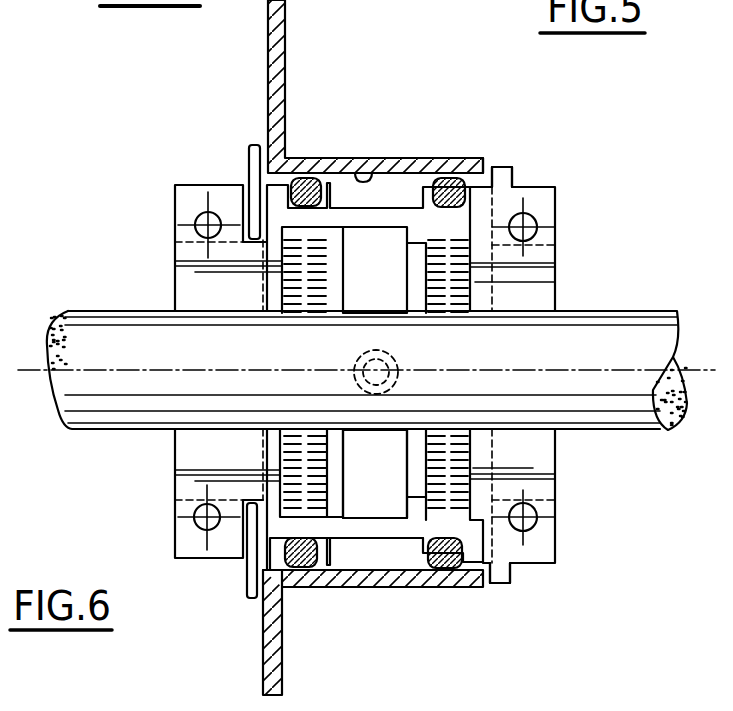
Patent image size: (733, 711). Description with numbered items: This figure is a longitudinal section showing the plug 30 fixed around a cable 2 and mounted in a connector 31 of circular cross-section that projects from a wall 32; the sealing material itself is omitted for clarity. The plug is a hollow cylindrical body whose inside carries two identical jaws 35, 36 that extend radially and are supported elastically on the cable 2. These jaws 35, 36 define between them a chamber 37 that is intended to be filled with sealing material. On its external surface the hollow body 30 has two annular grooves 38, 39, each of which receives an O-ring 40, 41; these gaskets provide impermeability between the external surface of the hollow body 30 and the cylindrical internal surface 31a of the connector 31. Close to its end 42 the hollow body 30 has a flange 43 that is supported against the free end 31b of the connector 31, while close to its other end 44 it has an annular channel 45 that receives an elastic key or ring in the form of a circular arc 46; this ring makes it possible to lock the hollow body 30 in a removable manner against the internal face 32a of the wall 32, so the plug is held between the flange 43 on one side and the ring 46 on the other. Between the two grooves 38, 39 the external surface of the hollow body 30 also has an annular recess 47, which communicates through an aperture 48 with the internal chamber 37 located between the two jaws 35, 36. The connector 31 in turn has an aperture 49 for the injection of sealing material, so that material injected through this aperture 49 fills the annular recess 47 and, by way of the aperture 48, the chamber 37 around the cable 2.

The cable 2 is at (600, 340).
The plug 30 is at (538, 183).
The connector 31 is at (415, 165).
The cylindrical internal surface of the connector 31a is at (385, 165).
The free end of the connector 31b is at (487, 158).
The wall 32 is at (283, 668).
The internal face of the wall 32a is at (263, 622).
The jaw 35 is at (282, 272).
The jaw 36 is at (470, 440).
The chamber 37 is at (382, 487).
The annular groove 38 is at (277, 533).
The annular groove 39 is at (447, 540).
The O-ring 40 is at (310, 176).
The O-ring 41 is at (455, 180).
The end of the hollow body 42 is at (557, 200).
The flange 43 is at (503, 172).
The other end of the hollow body 44 is at (175, 210).
The annular channel 45 is at (262, 492).
The elastic key or ring in the form of a circular arc 46 is at (250, 157).
The annular recess 47 is at (363, 540).
The aperture 48 is at (397, 377).
The aperture for injection of a sealing material 49 is at (388, 357).